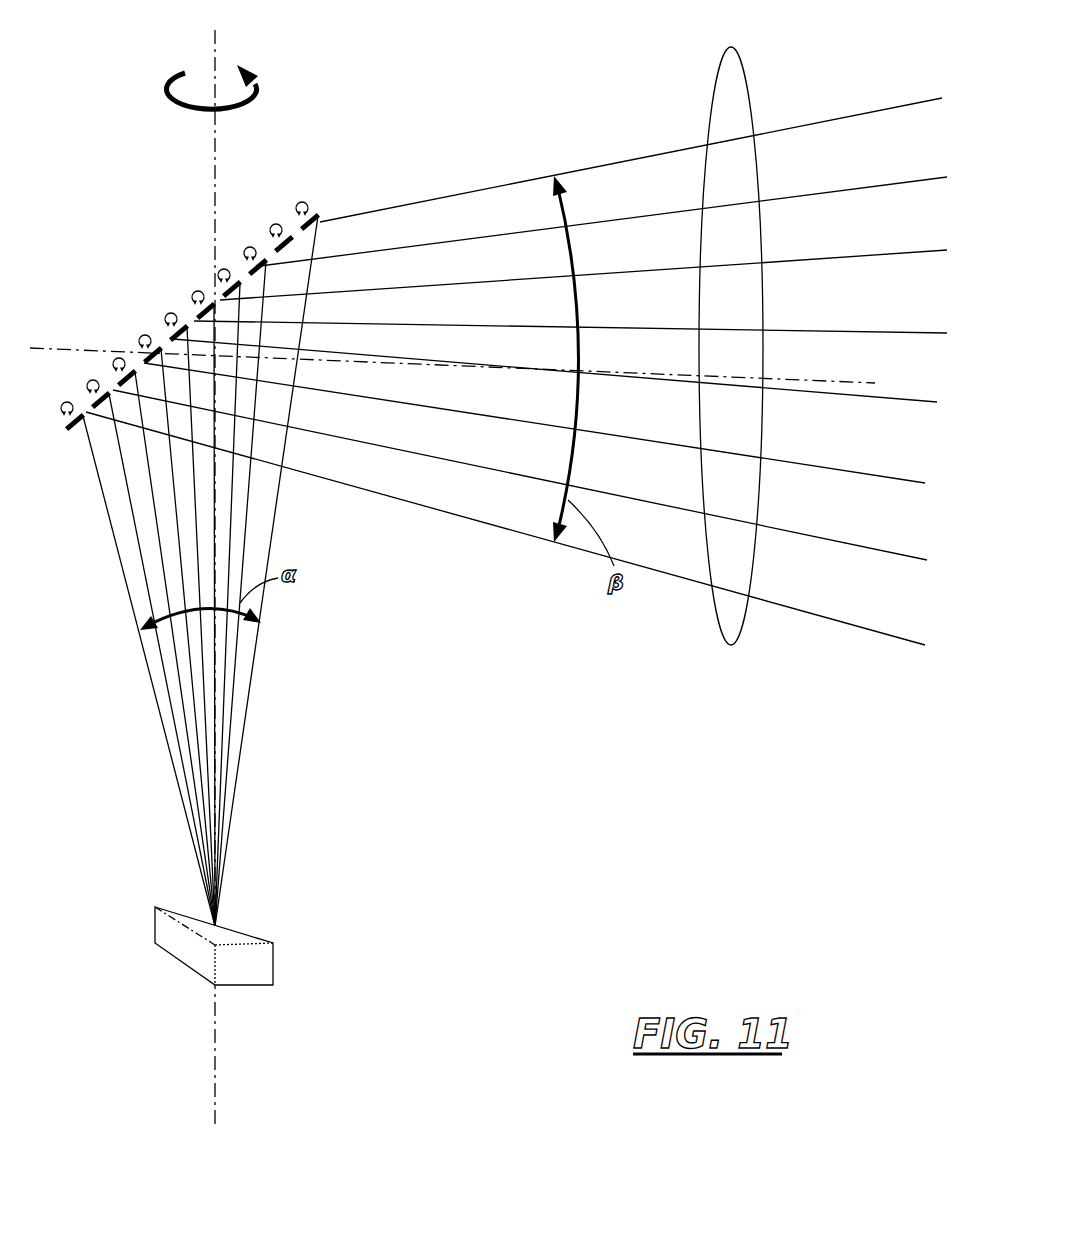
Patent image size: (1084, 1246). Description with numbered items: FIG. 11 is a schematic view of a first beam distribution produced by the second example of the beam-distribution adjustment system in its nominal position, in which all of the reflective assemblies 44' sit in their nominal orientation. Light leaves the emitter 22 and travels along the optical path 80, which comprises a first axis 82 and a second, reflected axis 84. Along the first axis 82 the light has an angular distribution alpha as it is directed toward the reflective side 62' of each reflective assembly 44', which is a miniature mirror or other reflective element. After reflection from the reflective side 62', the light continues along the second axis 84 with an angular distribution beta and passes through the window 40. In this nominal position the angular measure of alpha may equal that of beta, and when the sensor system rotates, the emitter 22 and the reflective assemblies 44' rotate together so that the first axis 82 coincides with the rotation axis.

The emitter 22 is at (181, 907).
The window 40 is at (750, 105).
The reflective assembly 44' is at (172, 304).
The reflective side 62' is at (76, 439).
The optical path 80 is at (827, 383).
The first axis 82 is at (213, 516).
The second axis 84 is at (662, 374).